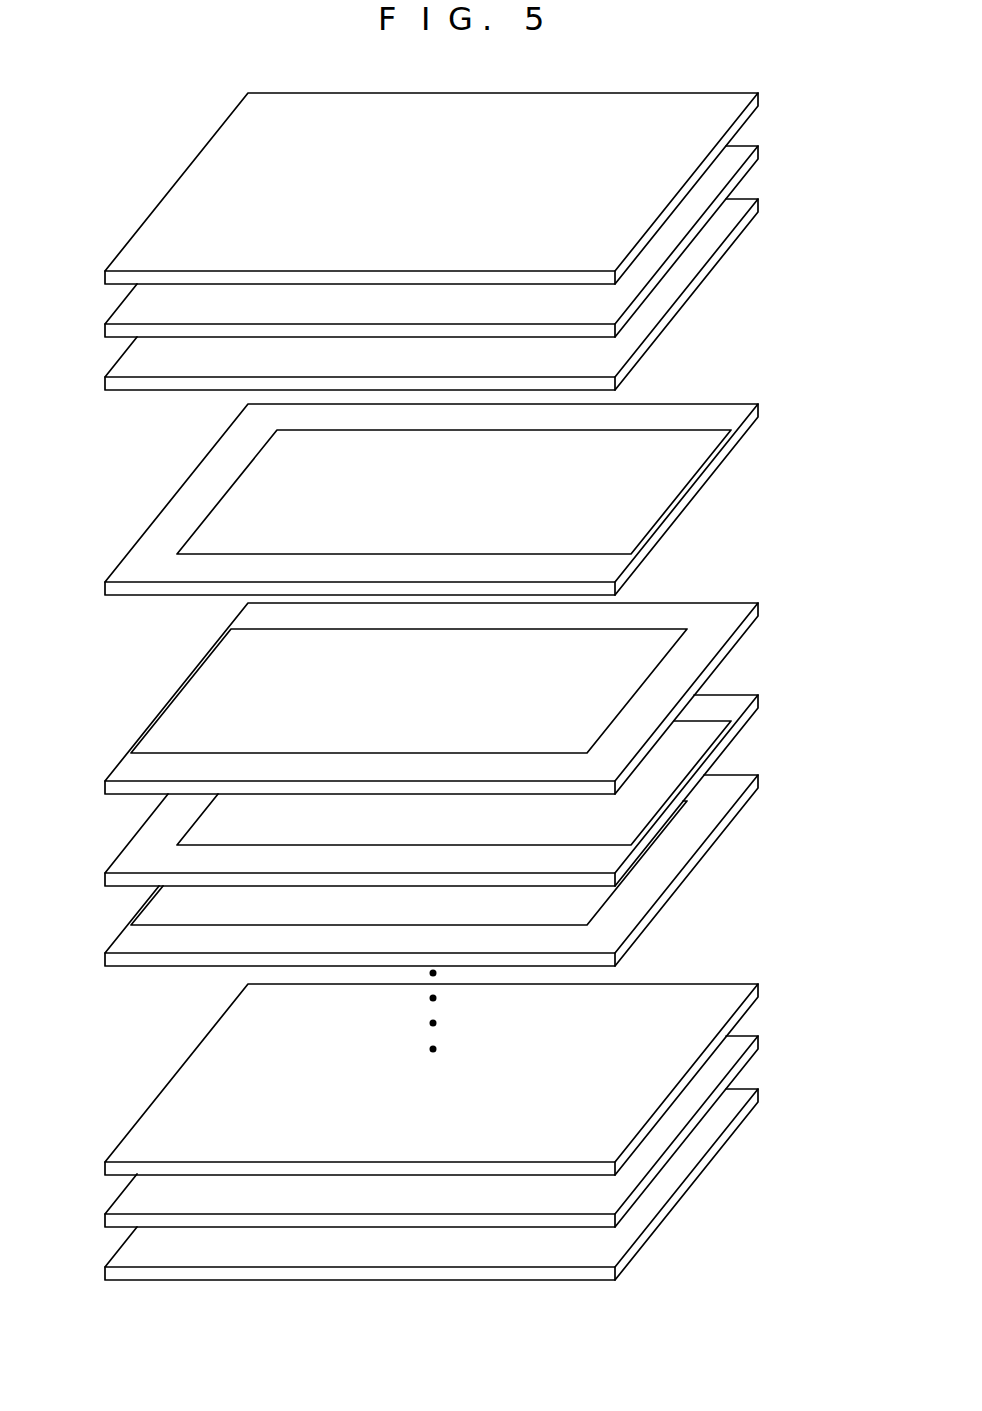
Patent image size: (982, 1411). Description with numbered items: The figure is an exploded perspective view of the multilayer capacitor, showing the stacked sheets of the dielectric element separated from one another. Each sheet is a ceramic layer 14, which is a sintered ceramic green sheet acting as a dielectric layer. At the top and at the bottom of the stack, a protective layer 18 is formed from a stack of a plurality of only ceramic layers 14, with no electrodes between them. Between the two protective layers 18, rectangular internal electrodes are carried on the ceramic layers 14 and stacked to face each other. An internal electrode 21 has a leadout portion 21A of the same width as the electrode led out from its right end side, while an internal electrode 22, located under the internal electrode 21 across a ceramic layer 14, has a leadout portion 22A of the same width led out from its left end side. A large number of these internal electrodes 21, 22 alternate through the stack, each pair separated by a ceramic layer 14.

The ceramic layer 14 is at (440, 690).
The protective layer 18 is at (88, 266).
The internal electrode 21 is at (459, 623).
The leadout portion 21A is at (670, 485).
The internal electrode 22 is at (399, 784).
The leadout portion 22A is at (363, 777).